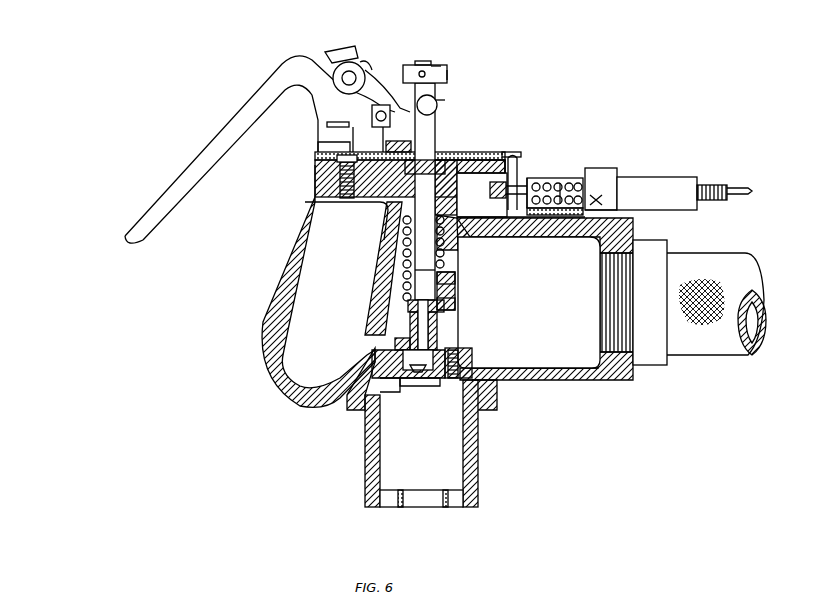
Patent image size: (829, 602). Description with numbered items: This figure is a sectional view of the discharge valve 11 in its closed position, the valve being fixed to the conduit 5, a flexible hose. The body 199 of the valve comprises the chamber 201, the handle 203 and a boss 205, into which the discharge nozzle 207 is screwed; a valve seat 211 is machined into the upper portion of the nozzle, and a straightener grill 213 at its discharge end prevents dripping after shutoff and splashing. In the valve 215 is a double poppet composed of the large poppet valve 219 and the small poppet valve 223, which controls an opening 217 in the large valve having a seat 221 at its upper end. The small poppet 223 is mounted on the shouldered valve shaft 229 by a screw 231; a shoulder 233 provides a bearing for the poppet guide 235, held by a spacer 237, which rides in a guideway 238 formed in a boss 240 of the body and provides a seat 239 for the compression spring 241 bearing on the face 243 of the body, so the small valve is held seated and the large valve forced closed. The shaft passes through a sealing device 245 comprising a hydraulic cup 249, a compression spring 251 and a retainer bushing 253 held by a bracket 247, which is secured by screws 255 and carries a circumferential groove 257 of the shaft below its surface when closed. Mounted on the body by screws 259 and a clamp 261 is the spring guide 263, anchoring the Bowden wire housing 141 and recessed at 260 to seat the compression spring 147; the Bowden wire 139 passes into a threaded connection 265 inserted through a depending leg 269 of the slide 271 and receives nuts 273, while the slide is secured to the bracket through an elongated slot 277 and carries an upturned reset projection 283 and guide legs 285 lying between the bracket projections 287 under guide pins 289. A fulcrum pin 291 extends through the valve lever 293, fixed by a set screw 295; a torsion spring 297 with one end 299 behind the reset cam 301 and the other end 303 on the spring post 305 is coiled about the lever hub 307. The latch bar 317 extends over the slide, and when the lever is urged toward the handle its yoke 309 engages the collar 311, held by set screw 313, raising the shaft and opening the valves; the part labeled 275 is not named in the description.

The conduit 5 is at (702, 350).
The discharge valve 11 is at (270, 285).
The Bowden wire 139 is at (750, 193).
The Bowden wire housing 141 is at (712, 200).
The compression spring 147 is at (545, 178).
The body 199 is at (560, 380).
The chamber 201 is at (520, 380).
The handle 203 is at (262, 350).
The boss 205 is at (497, 392).
The discharge nozzle 207 is at (478, 466).
The valve seat 211 is at (388, 400).
The straightener grill 213 is at (450, 506).
The valve 215 is at (470, 340).
The opening 217 is at (408, 390).
The large poppet valve 219 is at (474, 362).
The seat 221 is at (435, 386).
The small poppet valve 223 is at (472, 333).
The valve shaft 229 is at (422, 276).
The screw 231 is at (372, 358).
The shoulder 233 is at (410, 318).
The poppet guide 235 is at (408, 305).
The spacer 237 is at (398, 340).
The guideway 238 is at (458, 285).
The seat 239 is at (457, 283).
The boss 240 is at (457, 300).
The compression spring 241 is at (444, 264).
The face 243 is at (450, 226).
The sealing device 245 is at (380, 205).
The bracket 247 is at (358, 198).
The hydraulic cup 249 is at (462, 212).
The compression spring 251 is at (382, 240).
The retainer bushing 253 is at (480, 163).
The screws 255 is at (312, 183).
The circumferential groove 257 is at (468, 180).
The screws 259 is at (617, 200).
The recess 260 is at (565, 182).
The clamp 261 is at (600, 175).
The spring guide 263 is at (688, 180).
The externally threaded connection 265 is at (528, 215).
The depending leg 269 is at (555, 173).
The predeterminer reset and valve knockout slide 271 is at (466, 160).
The nuts 273 is at (506, 198).
The pipe 275 is at (496, 160).
The elongated slot 277 is at (470, 168).
The upturned reset projection 283 is at (360, 145).
The guide legs 285 is at (315, 155).
The upturned projections 287 is at (316, 142).
The guide pins 289 is at (388, 141).
The fulcrum pin 291 is at (326, 50).
The valve lever 293 is at (183, 183).
The set screw 295 is at (360, 62).
The torsion spring 297 is at (378, 64).
The spring end 299 is at (346, 123).
The reset cam 301 is at (315, 172).
The spring end 303 is at (390, 119).
The spring post 305 is at (418, 106).
The lever hub 307 is at (333, 78).
The yoke 309 is at (440, 100).
The collar 311 is at (450, 75).
The set screw 313 is at (447, 68).
The latch bar 317 is at (445, 160).